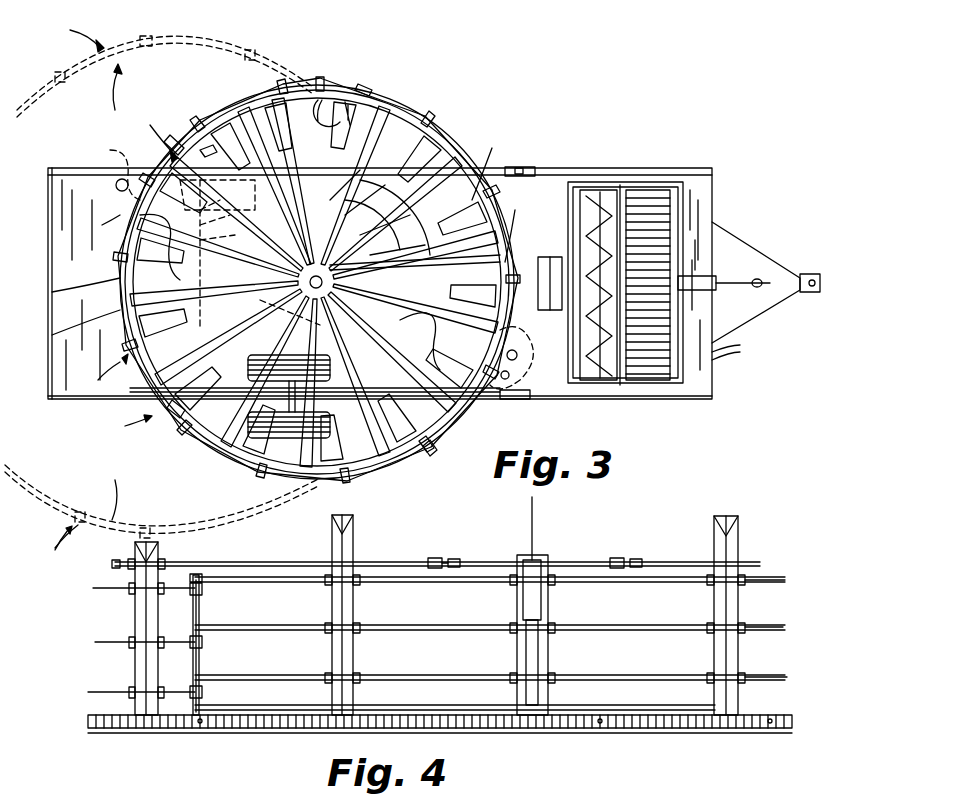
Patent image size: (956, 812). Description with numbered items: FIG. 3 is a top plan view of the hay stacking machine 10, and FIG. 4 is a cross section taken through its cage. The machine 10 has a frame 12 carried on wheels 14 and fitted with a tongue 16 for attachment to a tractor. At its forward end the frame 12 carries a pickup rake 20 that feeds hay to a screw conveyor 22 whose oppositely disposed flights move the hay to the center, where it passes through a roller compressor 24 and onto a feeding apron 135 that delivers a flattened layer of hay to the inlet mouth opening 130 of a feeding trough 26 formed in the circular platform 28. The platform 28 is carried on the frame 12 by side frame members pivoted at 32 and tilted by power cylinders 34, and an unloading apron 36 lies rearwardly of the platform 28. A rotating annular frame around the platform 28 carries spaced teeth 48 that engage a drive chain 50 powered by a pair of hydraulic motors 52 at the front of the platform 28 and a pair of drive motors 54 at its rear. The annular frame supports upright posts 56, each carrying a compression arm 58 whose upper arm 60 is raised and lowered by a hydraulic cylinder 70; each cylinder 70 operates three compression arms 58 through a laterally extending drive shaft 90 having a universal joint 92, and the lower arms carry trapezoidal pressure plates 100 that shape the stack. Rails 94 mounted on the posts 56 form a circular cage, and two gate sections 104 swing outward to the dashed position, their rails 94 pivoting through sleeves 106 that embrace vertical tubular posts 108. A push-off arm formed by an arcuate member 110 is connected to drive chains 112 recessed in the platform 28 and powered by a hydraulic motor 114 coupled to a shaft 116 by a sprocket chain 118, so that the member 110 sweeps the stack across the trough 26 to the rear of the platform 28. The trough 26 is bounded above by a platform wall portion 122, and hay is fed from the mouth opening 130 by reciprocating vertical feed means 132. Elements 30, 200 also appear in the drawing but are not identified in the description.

In FIG. 3, the hay stacking machine 10 is at (482, 112).
In FIG. 3, the frame 12 is at (610, 395).
In FIG. 3, the wheels 14 is at (218, 112).
In FIG. 3, the tongue 16 is at (780, 320).
In FIG. 3, the pickup rake 20 is at (655, 195).
In FIG. 3, the screw conveyor 22 is at (606, 188).
In FIG. 3, the roller compressor 24 is at (578, 188).
In FIG. 3, the feeding trough 26 is at (386, 212).
In FIG. 3, the circular platform 28 is at (272, 283).
In FIG. 4, the circular platform 28 is at (90, 716).
In FIG. 3, the wheel tire 30 is at (340, 400).
In FIG. 3, the pivot 32 is at (315, 425).
In FIG. 3, the power cylinders 34 is at (527, 167).
In FIG. 3, the unloading apron 36 is at (62, 400).
In FIG. 4, the teeth 48 is at (200, 724).
In FIG. 3, the drive chain 50 is at (99, 222).
In FIG. 4, the drive chain 50 is at (88, 733).
In FIG. 3, the hydraulic motors 52 is at (530, 390).
In FIG. 3, the drive motors 54 is at (105, 170).
In FIG. 3, the upright posts 56 is at (155, 50).
In FIG. 4, the upright posts 56 is at (134, 612).
In FIG. 3, the compression arms 58 is at (111, 373).
In FIG. 4, the compression arms 58 is at (330, 530).
In FIG. 3, the upper arm 60 is at (320, 100).
In FIG. 4, the upper arm 60 is at (160, 550).
In FIG. 3, the hydraulic cylinder 70 is at (176, 135).
In FIG. 3, the drive shaft 90 is at (450, 130).
In FIG. 4, the drive shaft 90 is at (128, 560).
In FIG. 3, the universal joint 92 is at (440, 104).
In FIG. 4, the universal joint 92 is at (438, 558).
In FIG. 3, the rails 94 is at (52, 335).
In FIG. 4, the rails 94 is at (92, 590).
In FIG. 3, the pressure plates 100 is at (175, 274).
In FIG. 3, the gate sections 104 is at (100, 284).
In FIG. 4, the gate sections 104 is at (50, 542).
In FIG. 3, the sleeves 106 is at (52, 292).
In FIG. 4, the sleeves 106 is at (200, 590).
In FIG. 4, the vertical tubular posts 108 is at (200, 650).
In FIG. 3, the arcuate member 110 is at (497, 159).
In FIG. 3, the drive chains 112 is at (385, 130).
In FIG. 3, the hydraulic motor 114 is at (233, 228).
In FIG. 3, the shaft 116 is at (218, 255).
In FIG. 3, the sprocket chain 118 is at (217, 208).
In FIG. 3, the platform wall portion 122 is at (405, 278).
In FIG. 3, the inlet mouth opening 130 is at (528, 218).
In FIG. 3, the vertical feed means 132 is at (385, 322).
In FIG. 3, the feeding apron 135 is at (544, 255).
In FIG. 3, the hydraulic cylinder 200 is at (752, 278).